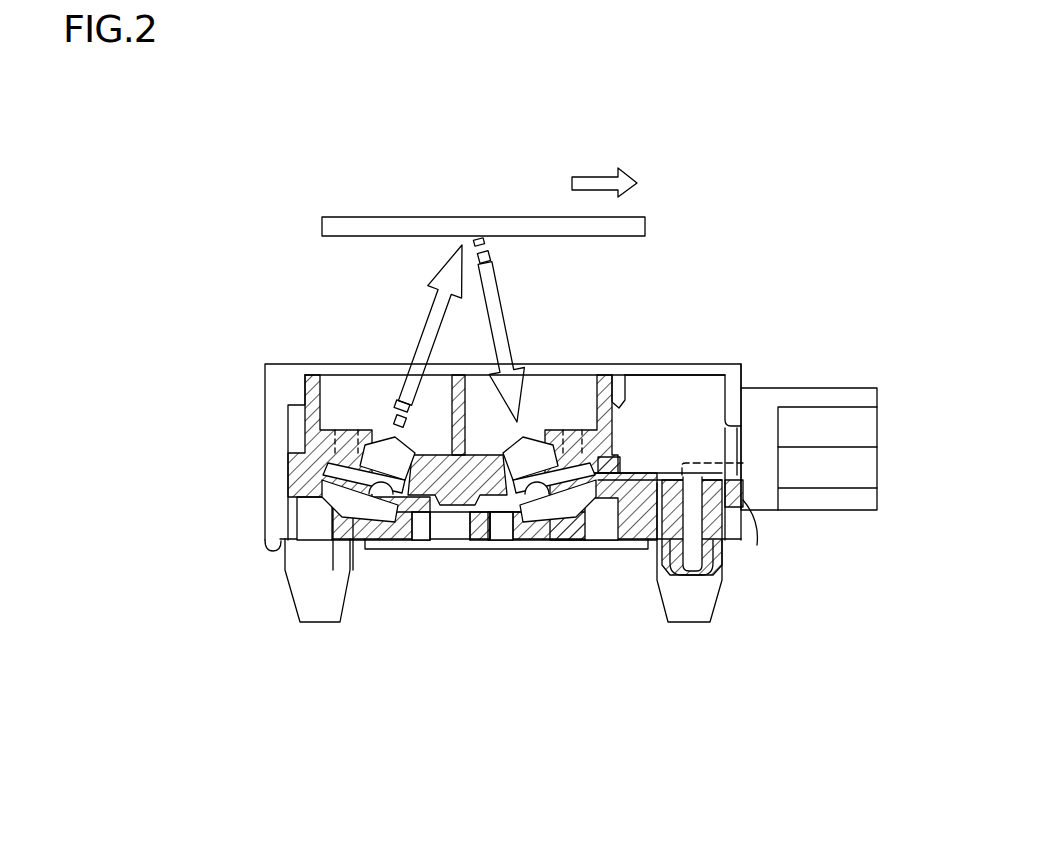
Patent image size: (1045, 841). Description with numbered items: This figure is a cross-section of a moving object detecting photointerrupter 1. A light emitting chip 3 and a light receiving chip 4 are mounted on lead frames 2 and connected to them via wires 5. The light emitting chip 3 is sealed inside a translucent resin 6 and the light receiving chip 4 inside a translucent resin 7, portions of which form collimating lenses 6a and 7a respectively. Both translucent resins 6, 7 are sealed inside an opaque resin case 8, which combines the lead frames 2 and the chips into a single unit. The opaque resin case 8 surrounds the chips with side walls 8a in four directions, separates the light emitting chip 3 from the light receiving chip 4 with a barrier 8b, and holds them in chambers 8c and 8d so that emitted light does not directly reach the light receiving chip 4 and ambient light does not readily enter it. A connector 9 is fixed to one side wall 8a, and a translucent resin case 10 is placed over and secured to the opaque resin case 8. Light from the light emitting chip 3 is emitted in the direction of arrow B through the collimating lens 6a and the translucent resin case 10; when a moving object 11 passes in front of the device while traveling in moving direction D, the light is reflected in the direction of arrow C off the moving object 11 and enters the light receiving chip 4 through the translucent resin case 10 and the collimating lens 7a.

The moving object detecting photointerrupter 1 is at (727, 314).
The lead frames 2 is at (468, 540).
The light emitting chip 3 is at (332, 537).
The light receiving chip 4 is at (547, 520).
The wires 5 is at (377, 537).
The translucent resin 6 is at (372, 470).
The collimating lens 6a is at (385, 437).
The translucent resin 7 is at (610, 457).
The collimating lens 7a is at (513, 437).
The opaque resin case 8 is at (410, 537).
The side wall 8a is at (293, 487).
The barrier 8b is at (458, 400).
The chamber 8c is at (342, 390).
The chamber 8d is at (577, 393).
The connector 9 is at (822, 388).
The translucent resin case 10 is at (723, 362).
The moving object 11 is at (326, 215).
The arrow B is at (423, 316).
The arrow C is at (497, 310).
The moving direction D is at (595, 176).